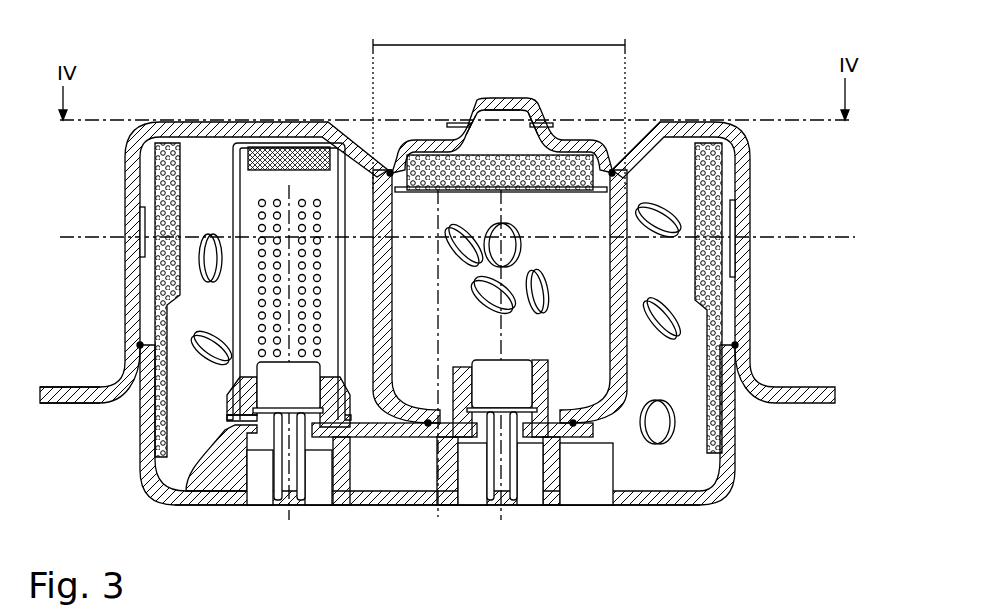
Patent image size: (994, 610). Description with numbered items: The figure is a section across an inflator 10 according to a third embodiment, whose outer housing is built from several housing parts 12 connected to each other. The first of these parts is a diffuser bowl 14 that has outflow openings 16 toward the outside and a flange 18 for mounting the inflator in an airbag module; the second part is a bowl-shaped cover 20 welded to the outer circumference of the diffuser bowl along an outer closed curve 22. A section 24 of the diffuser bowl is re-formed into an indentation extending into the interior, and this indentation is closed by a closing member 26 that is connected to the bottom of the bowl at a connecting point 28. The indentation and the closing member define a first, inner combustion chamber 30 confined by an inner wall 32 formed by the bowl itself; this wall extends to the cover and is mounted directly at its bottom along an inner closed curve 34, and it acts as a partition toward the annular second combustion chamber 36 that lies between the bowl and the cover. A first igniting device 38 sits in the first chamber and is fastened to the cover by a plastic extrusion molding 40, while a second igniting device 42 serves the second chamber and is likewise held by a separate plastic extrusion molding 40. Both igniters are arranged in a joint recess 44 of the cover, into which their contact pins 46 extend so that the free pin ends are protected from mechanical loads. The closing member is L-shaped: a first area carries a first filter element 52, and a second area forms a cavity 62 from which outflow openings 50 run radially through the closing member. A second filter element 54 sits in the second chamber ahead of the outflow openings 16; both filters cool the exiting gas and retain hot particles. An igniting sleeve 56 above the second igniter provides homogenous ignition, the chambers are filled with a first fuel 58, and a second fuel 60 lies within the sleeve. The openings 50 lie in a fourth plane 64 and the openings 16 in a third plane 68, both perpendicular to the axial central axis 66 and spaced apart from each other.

The inflator 10 is at (772, 75).
The housing part 12 is at (446, 304).
The diffuser bowl 14 is at (207, 125).
The outflow openings 16 is at (128, 233).
The flange 18 is at (70, 400).
The cover 20 is at (160, 497).
The outer closed curve 22 is at (138, 344).
The section 24 is at (500, 46).
The closing member 26 is at (520, 100).
The connecting point 28 is at (389, 171).
The first combustion chamber 30 is at (596, 221).
The inner wall 32 is at (612, 318).
The inner closed curve 34 is at (585, 426).
The second combustion chamber 36 is at (227, 201).
The first igniting device 38 is at (505, 378).
The plastic extrusion molding 40 is at (340, 506).
The second igniting device 42 is at (272, 392).
The recess 44 is at (590, 490).
The contact pins 46 is at (301, 500).
The outflow openings 50 is at (552, 124).
The first filter element 52 is at (418, 186).
The second filter element 54 is at (162, 172).
The igniting sleeve 56 is at (237, 146).
The first fuel 58 is at (214, 343).
The second fuel 60 is at (316, 213).
The cavity 62 is at (493, 145).
The fourth plane 64 is at (130, 120).
The axial central axis 66 is at (437, 517).
The third plane 68 is at (86, 243).